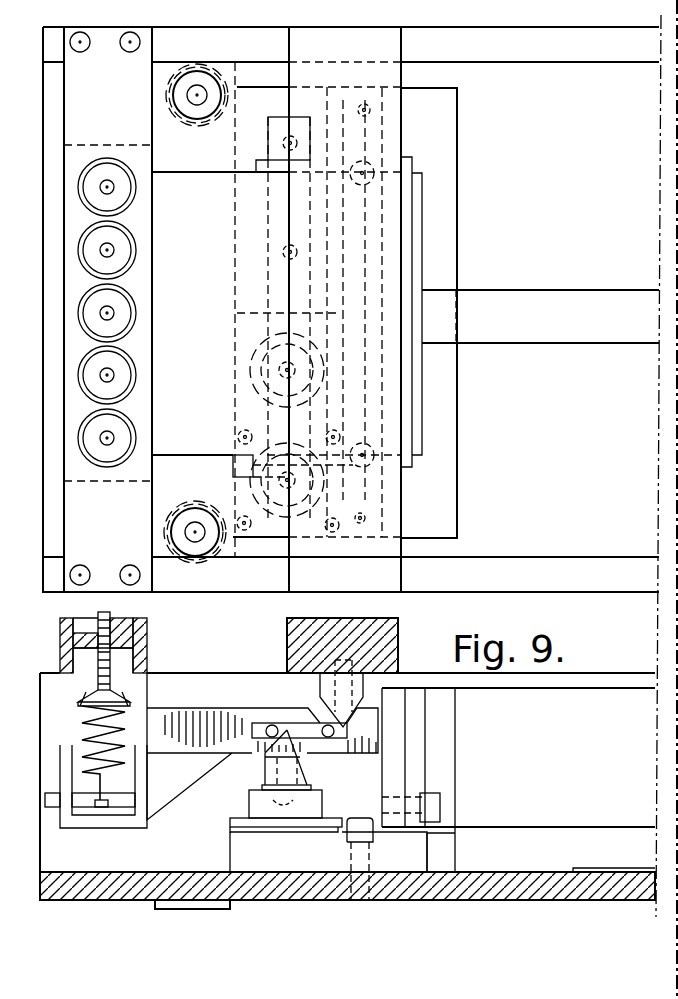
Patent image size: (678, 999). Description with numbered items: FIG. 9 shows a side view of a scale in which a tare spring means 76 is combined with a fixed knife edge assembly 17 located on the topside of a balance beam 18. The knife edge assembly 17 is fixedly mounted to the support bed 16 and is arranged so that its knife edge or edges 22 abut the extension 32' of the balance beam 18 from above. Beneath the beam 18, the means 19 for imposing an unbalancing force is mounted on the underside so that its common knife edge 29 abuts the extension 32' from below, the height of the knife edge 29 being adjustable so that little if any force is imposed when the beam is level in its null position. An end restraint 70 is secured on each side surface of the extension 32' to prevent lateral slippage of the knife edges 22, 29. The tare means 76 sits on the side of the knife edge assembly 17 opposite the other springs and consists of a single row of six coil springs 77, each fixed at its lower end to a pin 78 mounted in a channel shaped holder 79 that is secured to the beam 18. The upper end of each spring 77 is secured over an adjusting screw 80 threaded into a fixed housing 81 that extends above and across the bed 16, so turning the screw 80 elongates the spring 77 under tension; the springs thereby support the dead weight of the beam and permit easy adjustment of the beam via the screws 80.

The support bed 16 is at (168, 586).
The knife edge assembly 17 is at (390, 506).
The balance beam 18 is at (540, 820).
The means for imposing an unbalancing force 19 is at (192, 492).
The knife edges 22 is at (327, 690).
The common knife edge 29 is at (303, 771).
The extension 32' is at (262, 486).
The end restraint 70 is at (262, 160).
The tare means 76 is at (150, 27).
The coil springs 77 is at (128, 233).
The pin 78 is at (52, 807).
The channel shaped holder 79 is at (113, 830).
The adjusting screw 80 is at (108, 621).
The fixed housing 81 is at (148, 265).